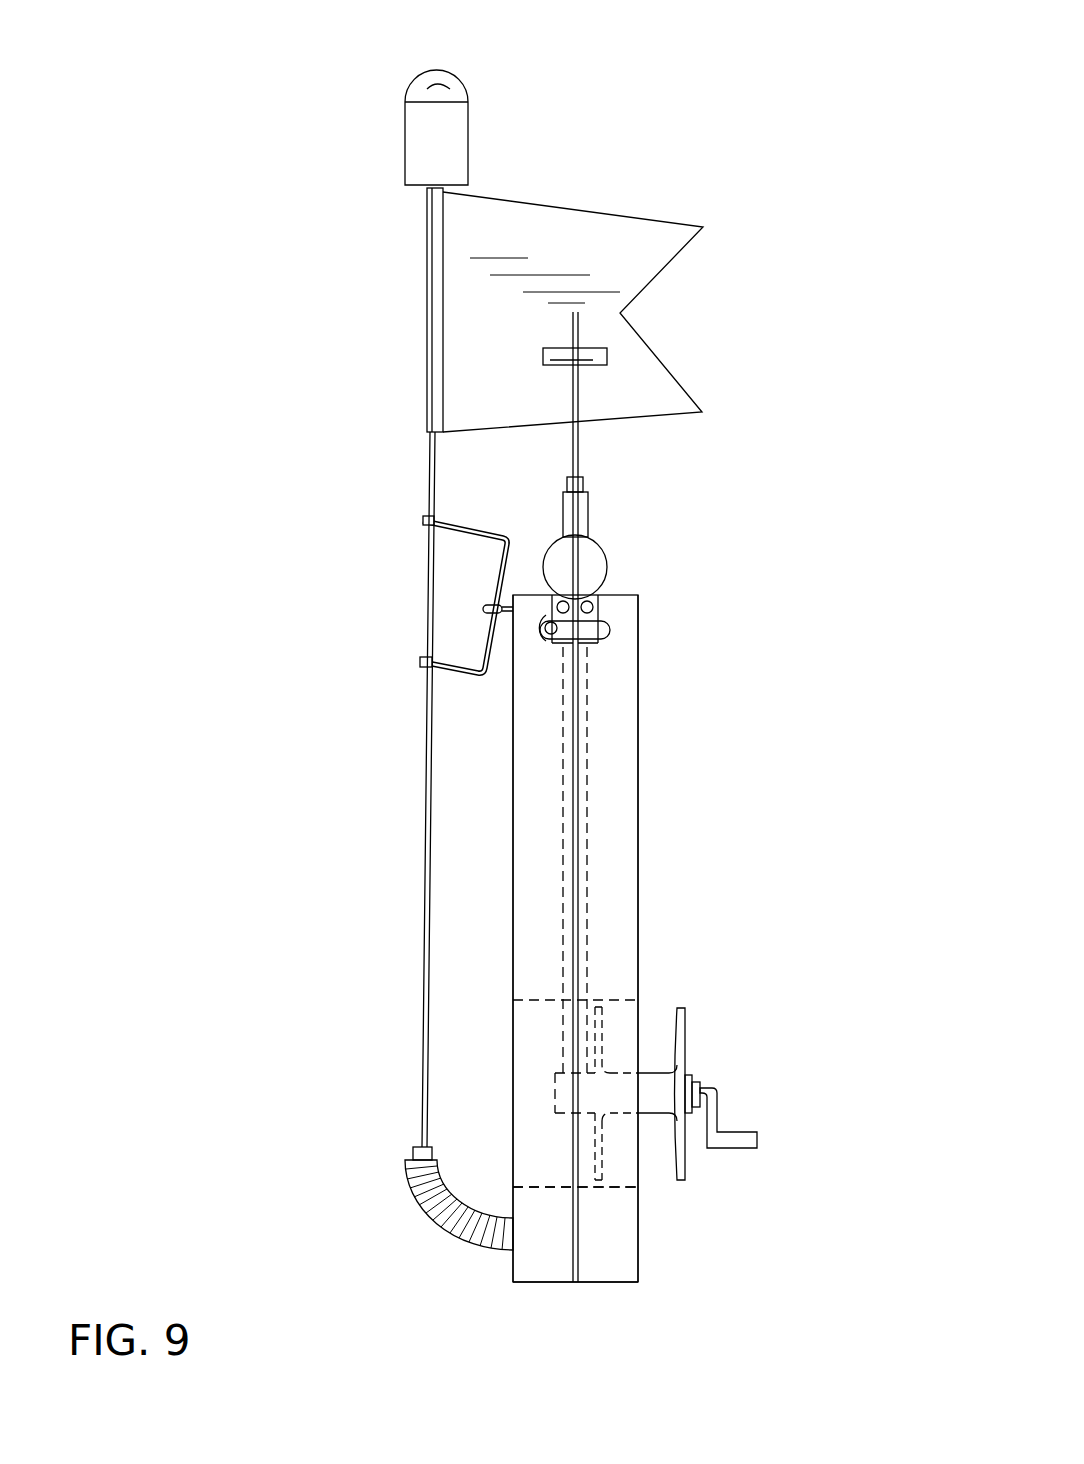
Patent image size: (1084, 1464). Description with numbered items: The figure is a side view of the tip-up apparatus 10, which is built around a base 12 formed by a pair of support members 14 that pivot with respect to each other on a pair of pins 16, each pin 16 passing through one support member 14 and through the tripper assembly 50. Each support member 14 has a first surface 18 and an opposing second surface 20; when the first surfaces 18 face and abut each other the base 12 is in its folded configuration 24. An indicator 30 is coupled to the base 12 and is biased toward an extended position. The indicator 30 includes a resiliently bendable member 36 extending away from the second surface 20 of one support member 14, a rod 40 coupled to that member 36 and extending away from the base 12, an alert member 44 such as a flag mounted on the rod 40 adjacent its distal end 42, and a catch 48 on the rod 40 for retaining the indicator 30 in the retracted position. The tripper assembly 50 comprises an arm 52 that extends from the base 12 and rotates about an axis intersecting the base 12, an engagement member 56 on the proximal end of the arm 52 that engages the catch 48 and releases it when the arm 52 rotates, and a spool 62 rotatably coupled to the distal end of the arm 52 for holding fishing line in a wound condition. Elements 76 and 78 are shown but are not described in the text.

The tip-up apparatus 10 is at (745, 105).
The base 12 is at (640, 1330).
The support members 14 is at (547, 1268).
The pins 16 is at (567, 602).
The first surface 18 is at (577, 1223).
The second surface 20 is at (638, 791).
The folded configuration 24 is at (732, 558).
The indicator 30 is at (350, 365).
The resiliently bendable member 36 is at (442, 1218).
The rod 40 is at (423, 990).
The distal end 42 is at (427, 192).
The alert member 44 is at (535, 232).
The catch 48 is at (475, 530).
The tripper assembly 50 is at (790, 1057).
The arm 52 is at (588, 857).
The engagement member 56 is at (600, 355).
The spool 62 is at (683, 1025).
The light 76 is at (427, 140).
The lens 78 is at (440, 80).